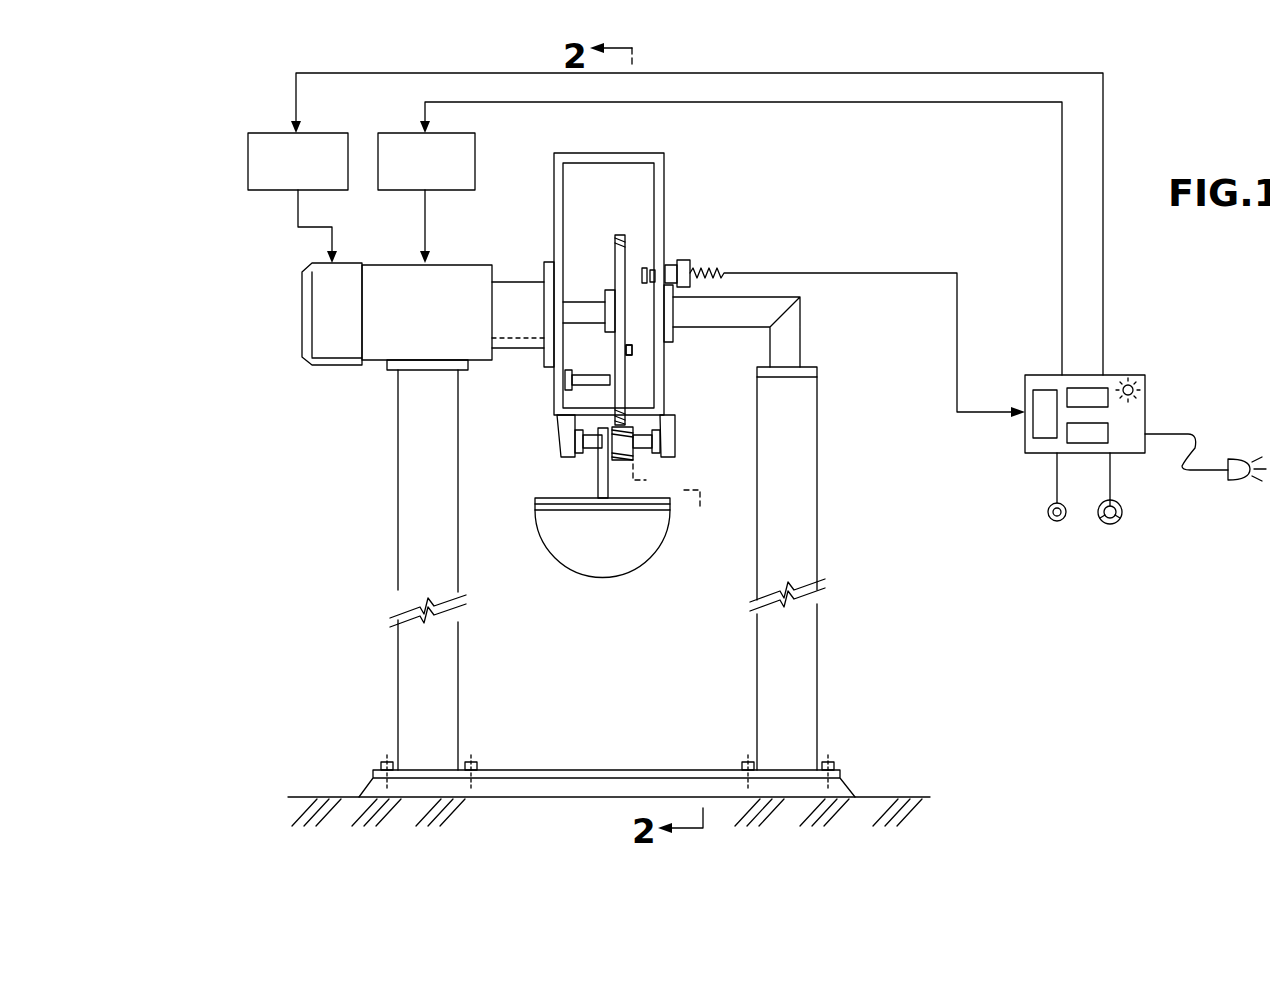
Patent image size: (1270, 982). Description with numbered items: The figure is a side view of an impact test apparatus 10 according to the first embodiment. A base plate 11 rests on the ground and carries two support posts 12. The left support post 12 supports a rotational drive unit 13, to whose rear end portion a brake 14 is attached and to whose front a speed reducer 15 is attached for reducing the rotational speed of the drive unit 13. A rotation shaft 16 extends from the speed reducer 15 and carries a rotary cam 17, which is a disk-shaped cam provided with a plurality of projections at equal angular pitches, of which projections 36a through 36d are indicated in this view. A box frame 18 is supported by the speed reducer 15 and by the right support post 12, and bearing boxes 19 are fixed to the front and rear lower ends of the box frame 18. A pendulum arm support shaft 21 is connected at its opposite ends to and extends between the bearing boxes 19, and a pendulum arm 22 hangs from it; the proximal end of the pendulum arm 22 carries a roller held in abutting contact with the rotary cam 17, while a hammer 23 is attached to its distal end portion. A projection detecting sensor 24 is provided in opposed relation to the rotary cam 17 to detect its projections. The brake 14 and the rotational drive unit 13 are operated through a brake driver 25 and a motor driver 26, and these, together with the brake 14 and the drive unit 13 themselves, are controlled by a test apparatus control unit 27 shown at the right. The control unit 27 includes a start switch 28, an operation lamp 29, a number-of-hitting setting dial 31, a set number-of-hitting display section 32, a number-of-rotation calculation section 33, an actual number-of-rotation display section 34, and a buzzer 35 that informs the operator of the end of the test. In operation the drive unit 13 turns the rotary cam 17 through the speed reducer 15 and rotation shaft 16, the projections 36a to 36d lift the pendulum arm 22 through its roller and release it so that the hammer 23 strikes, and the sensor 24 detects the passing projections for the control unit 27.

The impact test apparatus 10 is at (304, 490).
The base plate 11 is at (578, 770).
The support posts 12 is at (412, 677).
The rotational drive unit 13 is at (378, 352).
The brake 14 is at (322, 320).
The speed reducer 15 is at (522, 285).
The rotation shaft 16 is at (592, 310).
The rotary cam 17 is at (622, 243).
The box frame 18 is at (657, 177).
The bearing boxes 19 is at (565, 437).
The pendulum arm support shaft 21 is at (625, 445).
The pendulum arm 22 is at (600, 470).
The hammer 23 is at (640, 545).
The projection detecting sensor 24 is at (655, 265).
The brake driver 25 is at (268, 148).
The motor driver 26 is at (398, 148).
The test apparatus control unit 27 is at (1150, 366).
The start switch 28 is at (1057, 522).
The operation lamp 29 is at (1138, 388).
The number-of-hitting setting dial 31 is at (1122, 518).
The set number-of-hitting display section 32 is at (1072, 395).
The number-of-rotation calculation section 33 is at (1040, 425).
The actual number-of-rotation display section 34 is at (1105, 435).
The buzzer 35 is at (1242, 483).
The projection 36a is at (632, 350).
The projection 36d is at (629, 350).